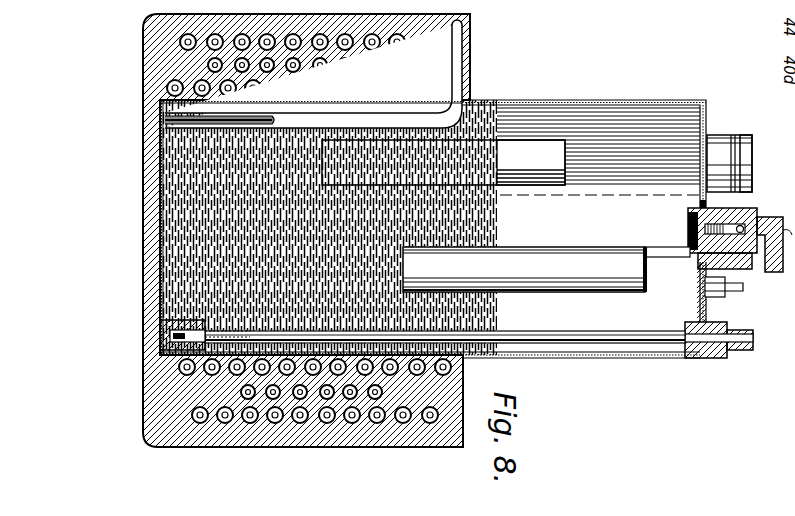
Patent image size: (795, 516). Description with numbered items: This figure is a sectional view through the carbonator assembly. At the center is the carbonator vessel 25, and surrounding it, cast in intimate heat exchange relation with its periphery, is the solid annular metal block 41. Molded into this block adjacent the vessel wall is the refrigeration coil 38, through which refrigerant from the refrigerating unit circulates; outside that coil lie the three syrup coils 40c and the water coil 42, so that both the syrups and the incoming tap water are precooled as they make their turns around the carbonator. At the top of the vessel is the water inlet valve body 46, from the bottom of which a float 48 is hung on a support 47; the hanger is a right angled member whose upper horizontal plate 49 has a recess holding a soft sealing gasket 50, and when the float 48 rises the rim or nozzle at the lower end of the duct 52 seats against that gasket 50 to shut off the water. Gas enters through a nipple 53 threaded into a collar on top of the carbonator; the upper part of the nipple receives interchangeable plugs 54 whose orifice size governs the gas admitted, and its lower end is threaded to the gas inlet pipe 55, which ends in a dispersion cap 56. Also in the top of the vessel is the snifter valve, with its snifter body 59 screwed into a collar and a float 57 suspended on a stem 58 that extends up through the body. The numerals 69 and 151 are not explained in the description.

The carbonator vessel 25 is at (585, 360).
The refrigeration coil 38 is at (450, 367).
The syrup cooling coils 40c is at (383, 398).
The metal block 41 is at (435, 447).
The water coil 42 is at (328, 416).
The valve body 46 is at (698, 256).
The support 47 is at (688, 214).
The float 48 is at (582, 262).
The plate 49 is at (690, 254).
The sealing gasket 50 is at (688, 236).
The duct 52 is at (690, 210).
The nipple 53 is at (733, 350).
The interchangeable plugs 54 is at (757, 342).
The gas inlet pipe 55 is at (633, 344).
The dispersion cap 56 is at (158, 336).
The float 57 is at (518, 186).
The stem 58 is at (600, 168).
The snifter body 59 is at (748, 168).
The sleeve 69 is at (735, 135).
The seal 151 is at (702, 200).